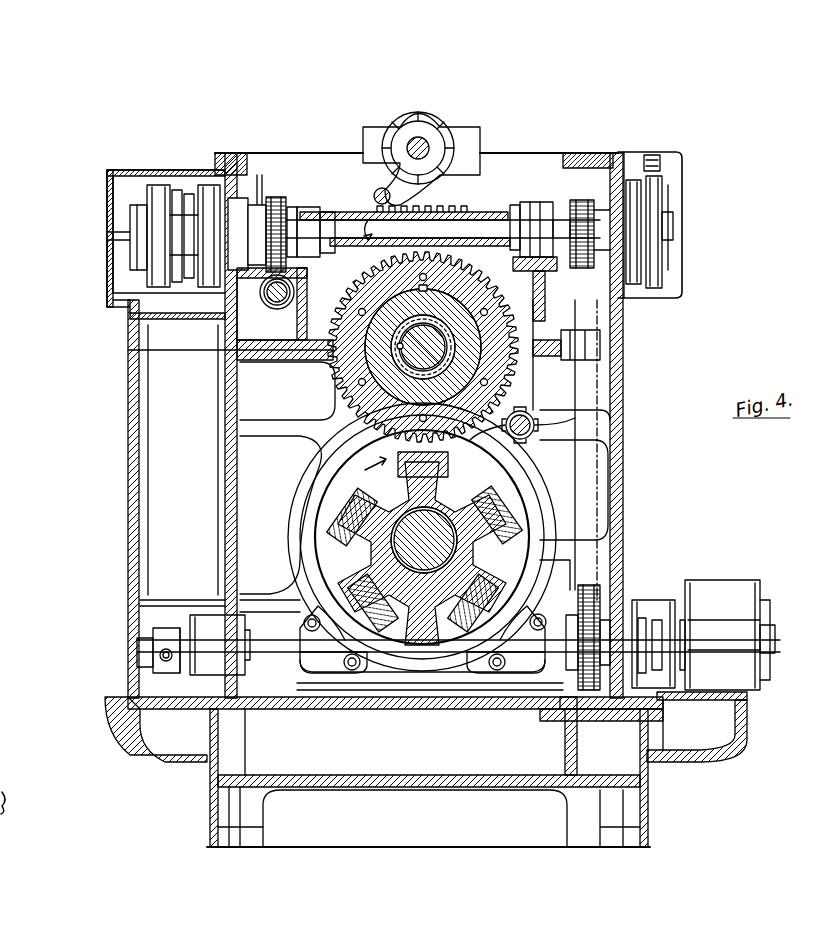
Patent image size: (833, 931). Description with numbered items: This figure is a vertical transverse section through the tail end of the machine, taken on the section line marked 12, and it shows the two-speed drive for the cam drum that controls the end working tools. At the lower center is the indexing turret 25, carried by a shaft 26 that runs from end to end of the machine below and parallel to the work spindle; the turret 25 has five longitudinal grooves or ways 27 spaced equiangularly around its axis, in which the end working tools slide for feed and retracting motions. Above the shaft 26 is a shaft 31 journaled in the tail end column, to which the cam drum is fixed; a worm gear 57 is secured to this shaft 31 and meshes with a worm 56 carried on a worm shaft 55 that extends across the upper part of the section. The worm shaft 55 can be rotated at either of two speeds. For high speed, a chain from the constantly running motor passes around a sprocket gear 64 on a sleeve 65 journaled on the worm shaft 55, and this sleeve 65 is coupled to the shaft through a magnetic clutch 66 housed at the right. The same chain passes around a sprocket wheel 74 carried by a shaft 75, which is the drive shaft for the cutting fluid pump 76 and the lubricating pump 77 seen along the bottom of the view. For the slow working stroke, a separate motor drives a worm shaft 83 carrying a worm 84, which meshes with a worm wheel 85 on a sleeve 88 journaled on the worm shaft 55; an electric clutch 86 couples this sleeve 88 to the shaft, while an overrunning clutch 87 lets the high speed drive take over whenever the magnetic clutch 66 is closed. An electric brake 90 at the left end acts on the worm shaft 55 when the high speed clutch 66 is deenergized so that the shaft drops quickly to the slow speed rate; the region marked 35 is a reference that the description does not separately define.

The section line 12 is at (245, 190).
The indexing turret 25 is at (470, 550).
The shaft 26 is at (408, 548).
The longitudinal grooves or ways 27 is at (448, 486).
The shaft 31 is at (470, 300).
The stator ring 35 is at (455, 598).
The worm shaft 55 is at (470, 226).
The worm 56 is at (440, 212).
The worm gear 57 is at (362, 290).
The sprocket gear 64 is at (588, 200).
The sleeve 65 is at (568, 242).
The magnetic clutch 66 is at (630, 185).
The sprocket wheel 74 is at (600, 598).
The shaft 75 is at (442, 688).
The cutting fluid pump 76 is at (708, 590).
The lubricating pump 77 is at (210, 625).
The worm shaft 83 is at (284, 308).
The worm 84 is at (268, 300).
The worm wheel 85 is at (288, 212).
The electric clutch 86 is at (207, 185).
The overrunning clutch 87 is at (183, 460).
The sleeve 88 is at (322, 210).
The electric brake 90 is at (165, 195).